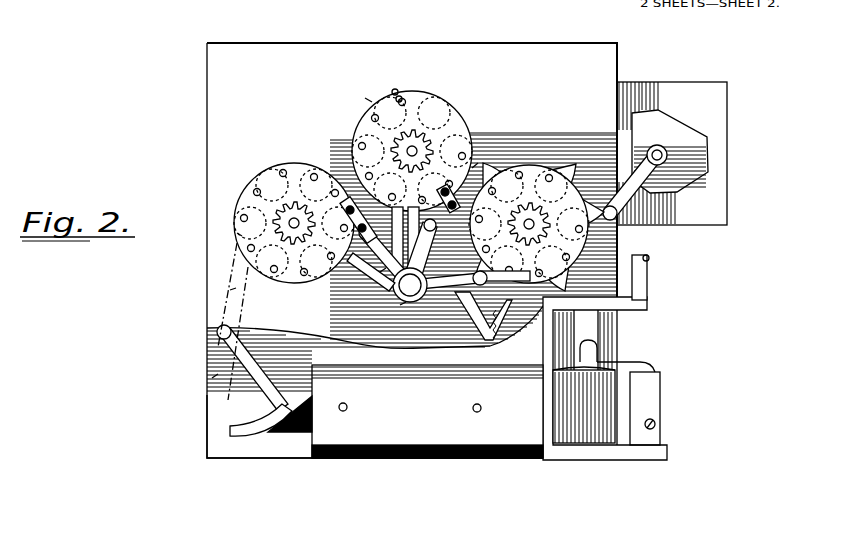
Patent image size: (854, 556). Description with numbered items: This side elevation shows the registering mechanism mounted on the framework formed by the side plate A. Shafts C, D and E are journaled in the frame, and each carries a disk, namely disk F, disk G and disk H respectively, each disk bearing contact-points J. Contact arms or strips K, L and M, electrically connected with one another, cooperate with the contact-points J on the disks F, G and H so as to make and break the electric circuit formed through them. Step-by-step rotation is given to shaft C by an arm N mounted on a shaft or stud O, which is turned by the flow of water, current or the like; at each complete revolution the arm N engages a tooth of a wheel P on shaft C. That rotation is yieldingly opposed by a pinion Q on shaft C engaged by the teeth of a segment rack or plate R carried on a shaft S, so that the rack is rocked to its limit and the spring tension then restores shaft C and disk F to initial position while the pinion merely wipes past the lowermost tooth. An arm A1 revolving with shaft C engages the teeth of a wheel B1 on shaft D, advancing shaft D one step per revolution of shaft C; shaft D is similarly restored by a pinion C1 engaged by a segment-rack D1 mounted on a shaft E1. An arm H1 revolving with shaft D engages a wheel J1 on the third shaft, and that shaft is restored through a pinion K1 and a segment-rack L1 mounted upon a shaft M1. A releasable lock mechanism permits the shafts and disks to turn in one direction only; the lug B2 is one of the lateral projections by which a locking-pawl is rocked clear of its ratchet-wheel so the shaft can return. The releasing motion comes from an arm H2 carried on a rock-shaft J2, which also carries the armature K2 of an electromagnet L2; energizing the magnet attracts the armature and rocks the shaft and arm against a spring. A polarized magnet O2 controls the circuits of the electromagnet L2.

The side plate A is at (230, 290).
The arm A1 is at (478, 163).
The wheel B1 is at (382, 98).
The lug or projection B2 is at (216, 436).
The shaft C is at (529, 224).
The pinion C1 is at (394, 88).
The shaft D is at (412, 151).
The segment-rack D1 is at (372, 330).
The shaft E is at (283, 173).
The shaft E1 is at (388, 330).
The disk F is at (512, 172).
The disk G is at (400, 98).
The disk H is at (294, 223).
The arm H1 is at (335, 193).
The arm H2 is at (255, 321).
The contact-points J is at (257, 192).
The wheel J1 is at (237, 233).
The rock-shaft J2 is at (380, 272).
The contact arm or strip K is at (506, 330).
The pinion K1 is at (216, 330).
The armature K2 is at (255, 436).
The contact arm or strip L is at (447, 333).
The segment-rack L1 is at (400, 305).
The electromagnet L2 is at (473, 457).
The contact arm or strip M is at (391, 245).
The shaft M1 is at (212, 378).
The arm N is at (627, 193).
The shaft or stud O is at (667, 155).
The polarized magnet O2 is at (597, 403).
The wheel P is at (638, 283).
The pinion Q is at (652, 300).
The segment rack or plate R is at (473, 330).
The shaft S is at (440, 330).